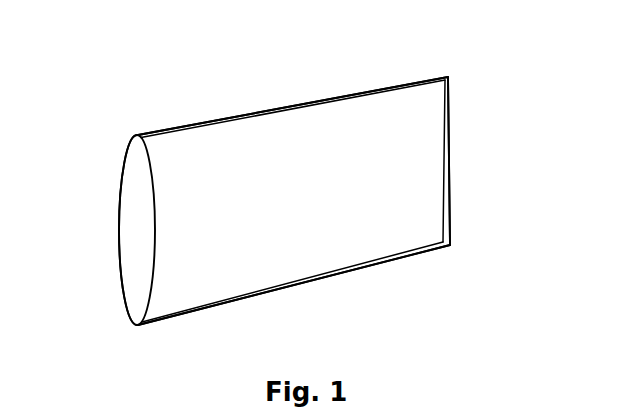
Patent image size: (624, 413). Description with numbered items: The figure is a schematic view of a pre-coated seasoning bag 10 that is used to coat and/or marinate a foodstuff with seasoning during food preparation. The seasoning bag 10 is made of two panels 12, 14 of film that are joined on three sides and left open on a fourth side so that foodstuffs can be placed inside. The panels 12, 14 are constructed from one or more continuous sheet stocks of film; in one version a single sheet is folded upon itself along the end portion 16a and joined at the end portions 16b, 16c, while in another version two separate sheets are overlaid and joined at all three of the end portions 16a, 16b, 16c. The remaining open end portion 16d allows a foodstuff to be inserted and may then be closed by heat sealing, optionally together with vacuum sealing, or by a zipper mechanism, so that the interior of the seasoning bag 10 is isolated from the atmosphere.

The pre-coated seasoning bag 10 is at (496, 38).
The panel 12 is at (135, 228).
The panel 14 is at (172, 173).
The end portion 16a is at (292, 107).
The end portion 16b is at (452, 157).
The end portion 16c is at (311, 281).
The open end portion 16d is at (120, 267).